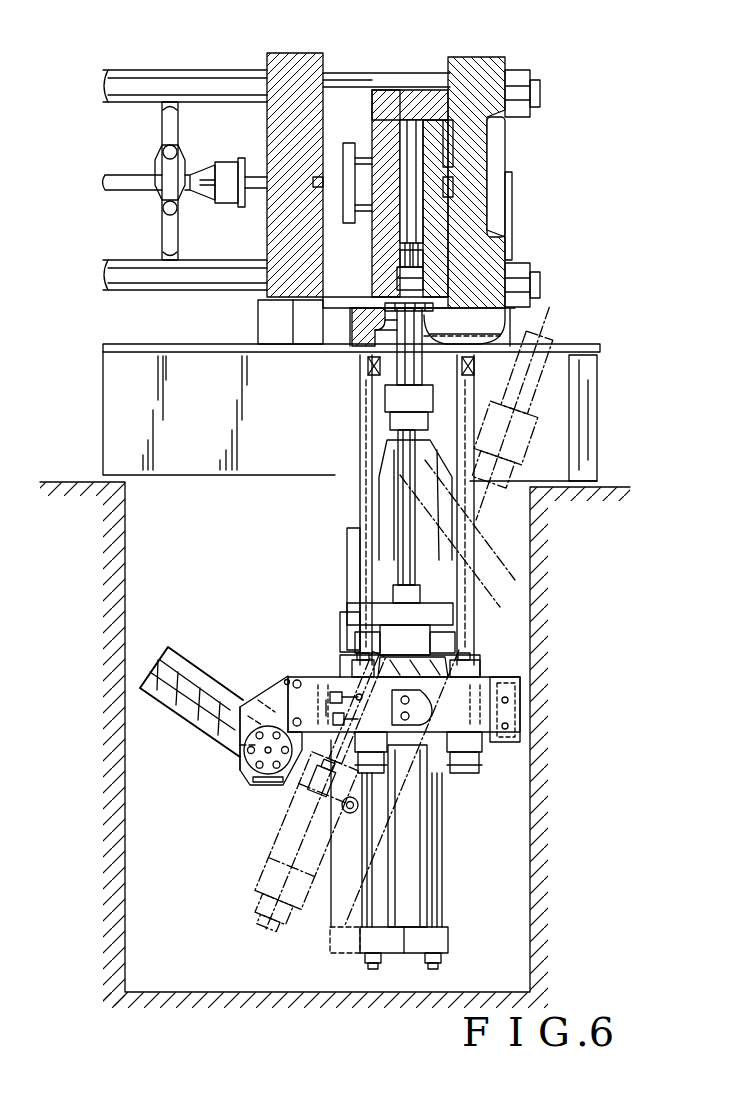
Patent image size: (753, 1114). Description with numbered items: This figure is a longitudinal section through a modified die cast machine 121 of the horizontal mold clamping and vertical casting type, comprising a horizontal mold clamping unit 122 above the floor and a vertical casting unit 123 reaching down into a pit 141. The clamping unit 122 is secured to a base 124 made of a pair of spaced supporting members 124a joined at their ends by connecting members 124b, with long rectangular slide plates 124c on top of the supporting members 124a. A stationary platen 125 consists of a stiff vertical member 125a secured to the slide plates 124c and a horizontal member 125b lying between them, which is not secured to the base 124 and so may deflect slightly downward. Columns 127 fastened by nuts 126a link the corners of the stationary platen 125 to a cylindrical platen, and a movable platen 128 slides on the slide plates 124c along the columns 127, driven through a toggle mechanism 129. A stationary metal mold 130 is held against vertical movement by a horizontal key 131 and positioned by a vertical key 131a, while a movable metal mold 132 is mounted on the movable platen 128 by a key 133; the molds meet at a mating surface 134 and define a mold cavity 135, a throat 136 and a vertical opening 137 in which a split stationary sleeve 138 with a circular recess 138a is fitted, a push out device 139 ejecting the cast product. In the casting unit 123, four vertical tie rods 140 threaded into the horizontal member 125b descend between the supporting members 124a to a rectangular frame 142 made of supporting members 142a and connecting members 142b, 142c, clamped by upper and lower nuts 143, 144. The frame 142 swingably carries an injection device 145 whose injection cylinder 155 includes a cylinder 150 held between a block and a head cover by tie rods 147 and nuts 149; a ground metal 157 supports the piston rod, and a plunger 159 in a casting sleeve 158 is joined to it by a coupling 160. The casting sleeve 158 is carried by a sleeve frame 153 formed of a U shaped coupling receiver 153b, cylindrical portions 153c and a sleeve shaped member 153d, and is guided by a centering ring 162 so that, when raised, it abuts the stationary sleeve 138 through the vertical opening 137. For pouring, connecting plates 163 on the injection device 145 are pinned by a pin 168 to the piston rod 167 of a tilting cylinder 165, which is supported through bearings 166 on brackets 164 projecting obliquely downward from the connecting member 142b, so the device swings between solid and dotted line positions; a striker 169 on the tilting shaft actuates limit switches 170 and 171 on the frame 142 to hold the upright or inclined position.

The die cast machine 121 is at (575, 102).
The horizontal mold clamping unit 122 is at (234, 66).
The vertical casting unit 123 is at (293, 612).
The base 124 is at (582, 348).
The supporting members 124a is at (118, 415).
The connecting members 124b is at (598, 410).
The slide plates 124c is at (212, 343).
The stationary platen 125 is at (515, 190).
The vertical member 125a is at (483, 66).
The horizontal member 125b is at (355, 348).
The nuts 126a is at (527, 73).
The columns 127 is at (160, 78).
The movable platen 128 is at (283, 58).
The toggle mechanism 129 is at (165, 163).
The stationary metal mold 130 is at (436, 100).
The horizontal key 131 is at (455, 185).
The vertical key 131a is at (455, 140).
The movable metal mold 132 is at (392, 100).
The key 133 is at (313, 188).
The mating surface 134 is at (422, 88).
The mold cavity 135 is at (403, 133).
The throat 136 is at (405, 255).
The vertical opening 137 is at (413, 270).
The stationary sleeve 138 is at (493, 237).
The circular recess 138a is at (420, 253).
The push out device 139 is at (349, 160).
The vertical tie rods 140 is at (372, 420).
The pit 141 is at (538, 822).
The rectangular frame 142 is at (510, 668).
The supporting members 142a is at (300, 678).
The connecting member 142b is at (290, 678).
The connecting member 142c is at (503, 742).
The upper nuts 143 is at (330, 662).
The lower nuts 144 is at (468, 775).
The injection device 145 is at (340, 567).
The vertical tie rods 147 is at (442, 852).
The nuts 149 is at (370, 966).
The cylinder 150 is at (425, 885).
The sleeve frame 153 is at (345, 545).
The coupling receiver 153b is at (460, 632).
The cylindrical portions 153c is at (347, 556).
The sleeve shaped member 153d is at (385, 398).
The injection cylinder 155 is at (450, 838).
The ground metal 157 is at (390, 617).
The casting sleeve 158 is at (370, 366).
The plunger 159 is at (400, 467).
The coupling 160 is at (393, 598).
The centering ring 162 is at (398, 301).
The connecting plates 163 is at (300, 850).
The brackets 164 is at (240, 740).
The tilting cylinder 165 is at (200, 712).
The bearings 166 is at (258, 770).
The piston rod 167 is at (316, 785).
The pin 168 is at (350, 814).
The striker 169 is at (410, 733).
The limit switch 170 is at (283, 688).
The limit switch 171 is at (340, 727).